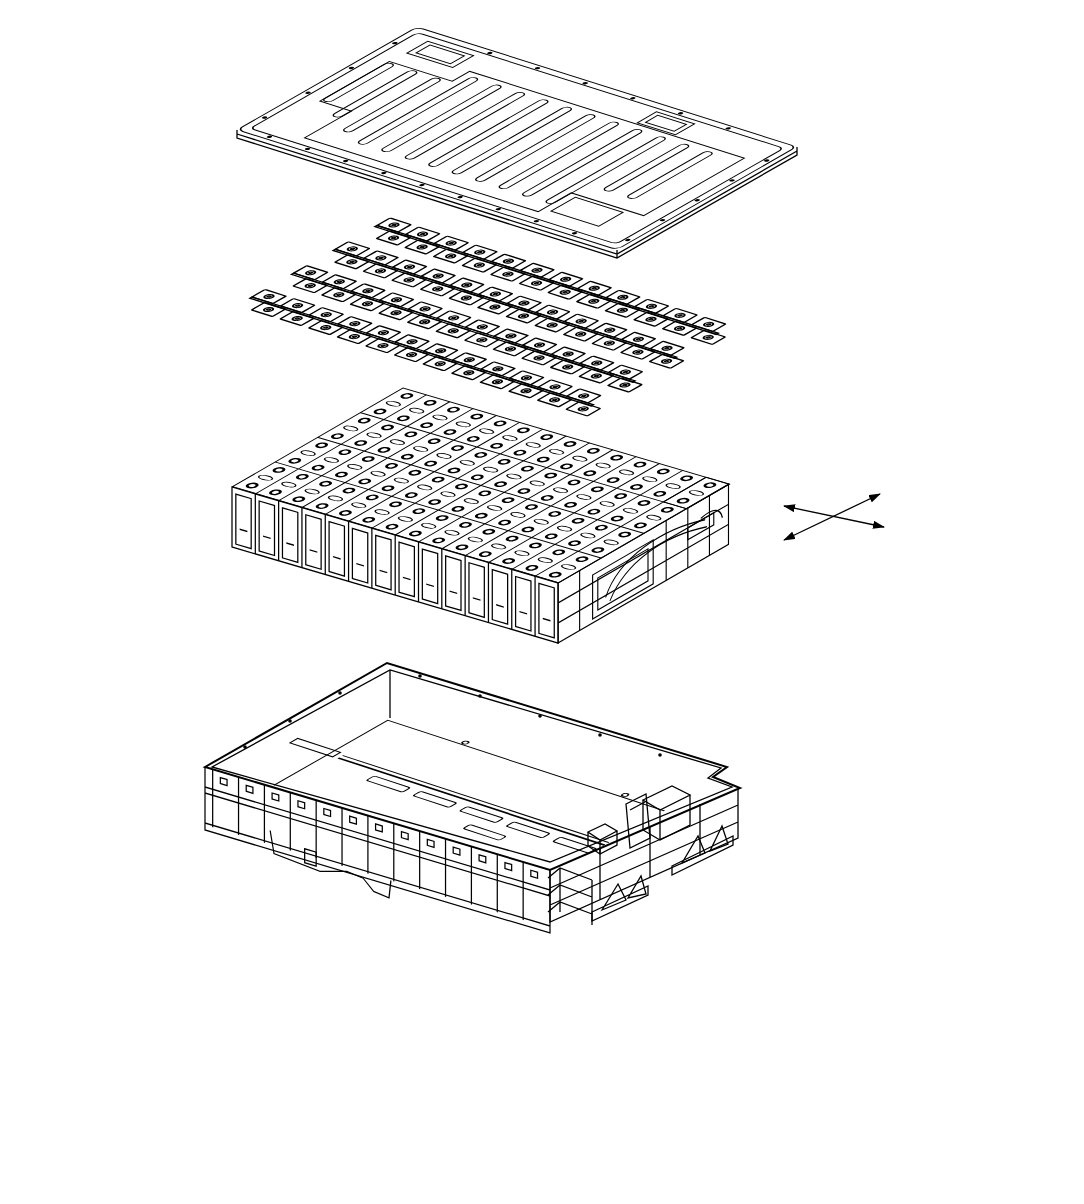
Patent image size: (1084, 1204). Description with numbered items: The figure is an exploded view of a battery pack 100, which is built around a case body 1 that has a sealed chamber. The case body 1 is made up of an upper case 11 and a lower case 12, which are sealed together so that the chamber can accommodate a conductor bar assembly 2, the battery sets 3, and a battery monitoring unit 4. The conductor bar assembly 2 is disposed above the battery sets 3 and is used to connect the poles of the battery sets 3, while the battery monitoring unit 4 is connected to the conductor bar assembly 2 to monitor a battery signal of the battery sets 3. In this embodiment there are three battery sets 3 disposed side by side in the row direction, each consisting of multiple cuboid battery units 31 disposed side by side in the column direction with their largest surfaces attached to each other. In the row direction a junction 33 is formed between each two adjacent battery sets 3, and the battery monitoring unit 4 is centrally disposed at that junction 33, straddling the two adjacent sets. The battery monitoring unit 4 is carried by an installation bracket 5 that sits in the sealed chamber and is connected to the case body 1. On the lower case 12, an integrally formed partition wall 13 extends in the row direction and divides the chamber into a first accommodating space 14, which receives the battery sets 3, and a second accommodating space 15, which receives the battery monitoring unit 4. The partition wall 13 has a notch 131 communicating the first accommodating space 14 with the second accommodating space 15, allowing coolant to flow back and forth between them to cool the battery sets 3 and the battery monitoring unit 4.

The case body 1 is at (163, 52).
The battery pack 100 is at (720, 56).
The upper case 11 is at (285, 118).
The lower case 12 is at (206, 767).
The partition wall 13 is at (648, 888).
The notch 131 is at (638, 834).
The first accommodating space 14 is at (574, 743).
The second accommodating space 15 is at (678, 842).
The conductor bar assembly 2 is at (685, 268).
The battery set 3 is at (670, 446).
The battery unit 31 is at (702, 494).
The junction 33 is at (344, 417).
The battery monitoring unit 4 is at (640, 605).
The installation bracket 5 is at (674, 572).